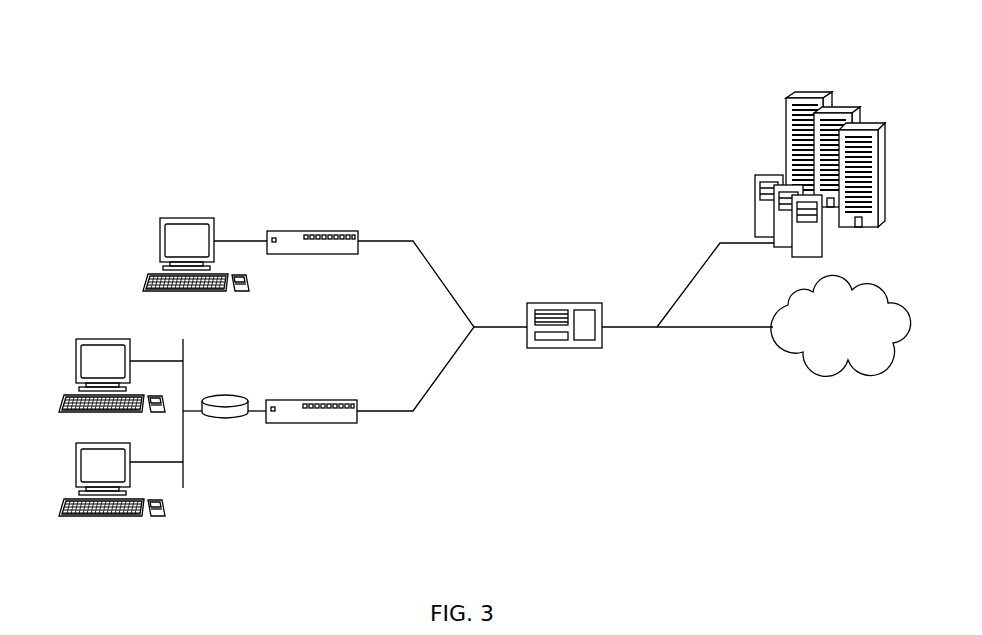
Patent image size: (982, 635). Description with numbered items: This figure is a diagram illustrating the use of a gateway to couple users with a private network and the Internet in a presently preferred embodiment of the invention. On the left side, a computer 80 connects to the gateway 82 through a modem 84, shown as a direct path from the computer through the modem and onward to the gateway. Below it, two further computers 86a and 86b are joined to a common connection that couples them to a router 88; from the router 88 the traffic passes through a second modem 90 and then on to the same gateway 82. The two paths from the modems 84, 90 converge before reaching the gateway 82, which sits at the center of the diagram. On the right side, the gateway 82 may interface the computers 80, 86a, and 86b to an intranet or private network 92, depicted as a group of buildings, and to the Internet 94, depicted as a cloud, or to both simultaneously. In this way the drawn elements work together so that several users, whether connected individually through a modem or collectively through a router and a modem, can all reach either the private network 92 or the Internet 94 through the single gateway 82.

The computer 80 is at (190, 218).
The gateway 82 is at (568, 303).
The modem 84 is at (313, 231).
The computer 86a is at (103, 339).
The computer 86b is at (103, 517).
The router 88 is at (224, 398).
The modem 90 is at (313, 400).
The intranet or private network 92 is at (838, 110).
The Internet 94 is at (878, 290).